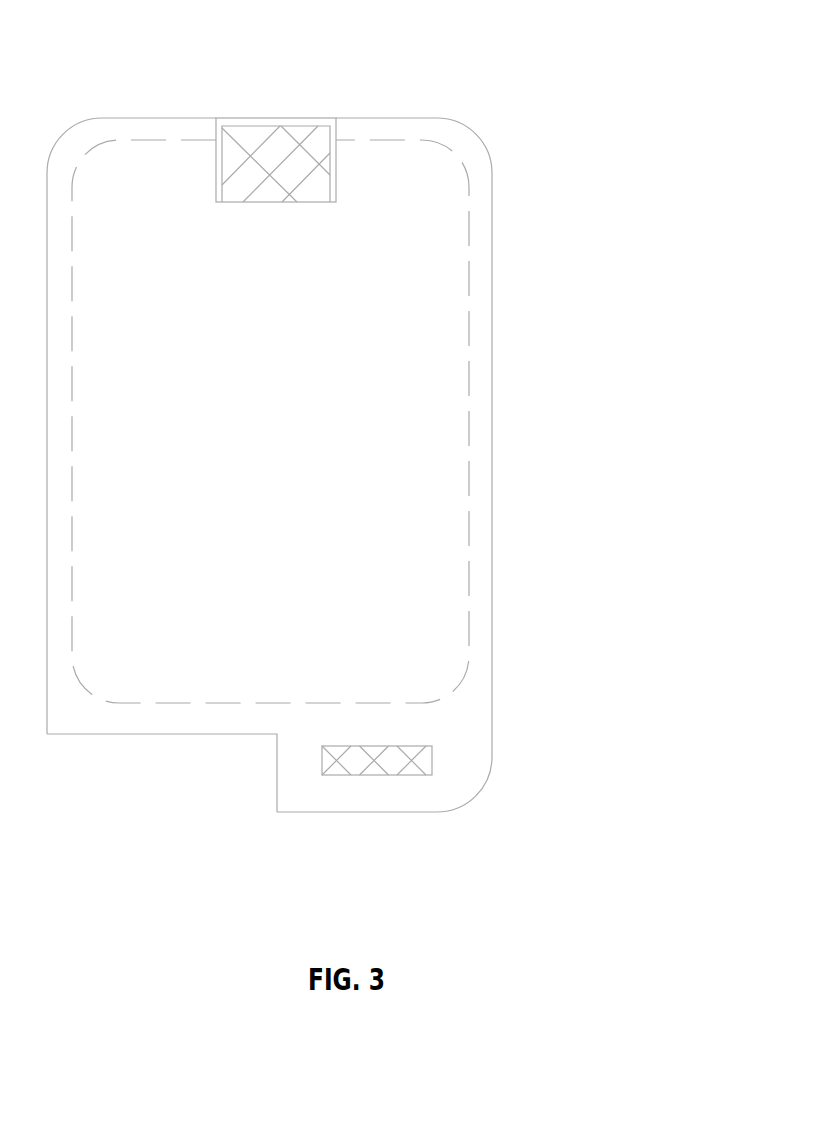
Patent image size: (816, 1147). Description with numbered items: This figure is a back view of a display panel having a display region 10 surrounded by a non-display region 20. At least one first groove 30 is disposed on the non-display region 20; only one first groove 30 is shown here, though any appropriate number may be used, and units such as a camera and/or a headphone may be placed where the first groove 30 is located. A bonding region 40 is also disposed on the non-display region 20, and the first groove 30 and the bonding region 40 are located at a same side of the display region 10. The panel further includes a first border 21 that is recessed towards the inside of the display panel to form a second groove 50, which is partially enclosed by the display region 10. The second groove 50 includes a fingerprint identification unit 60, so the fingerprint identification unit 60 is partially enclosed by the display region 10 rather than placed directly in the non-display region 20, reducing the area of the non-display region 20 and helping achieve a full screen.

The display region 10 is at (427, 288).
The non-display region 20 is at (483, 485).
The first border 21 is at (297, 200).
The first groove 30 is at (145, 761).
The bonding region 40 is at (387, 767).
The second groove 50 is at (333, 167).
The fingerprint identification unit 60 is at (282, 136).